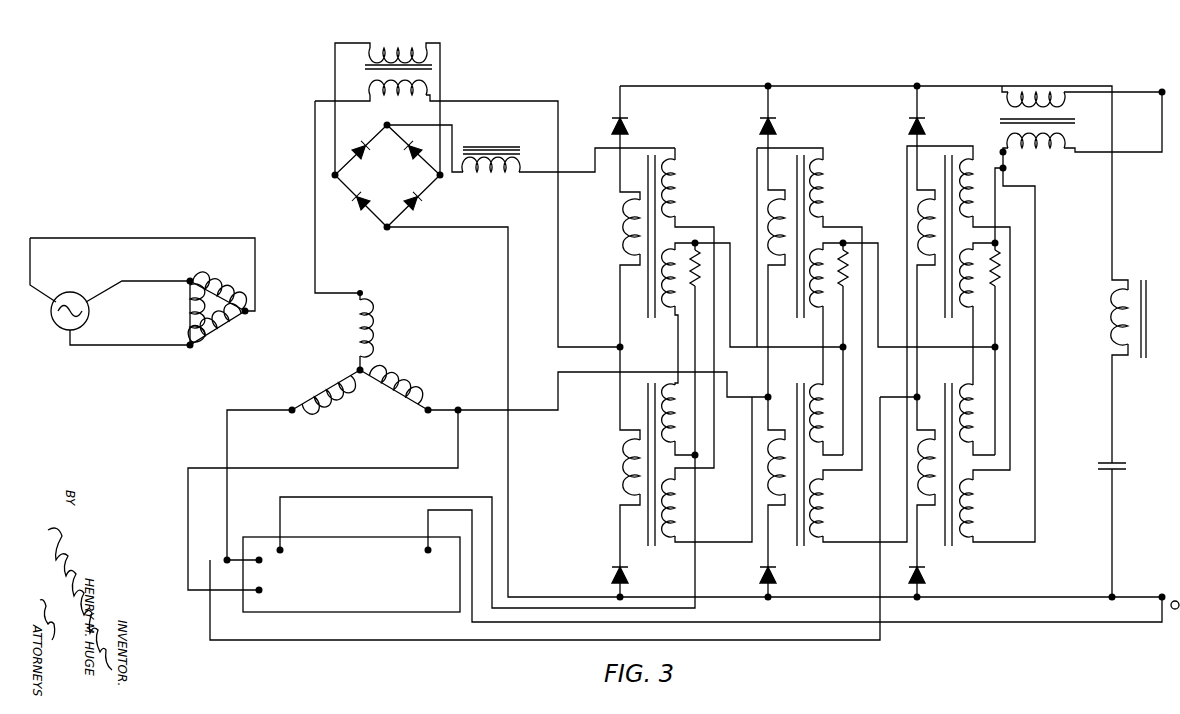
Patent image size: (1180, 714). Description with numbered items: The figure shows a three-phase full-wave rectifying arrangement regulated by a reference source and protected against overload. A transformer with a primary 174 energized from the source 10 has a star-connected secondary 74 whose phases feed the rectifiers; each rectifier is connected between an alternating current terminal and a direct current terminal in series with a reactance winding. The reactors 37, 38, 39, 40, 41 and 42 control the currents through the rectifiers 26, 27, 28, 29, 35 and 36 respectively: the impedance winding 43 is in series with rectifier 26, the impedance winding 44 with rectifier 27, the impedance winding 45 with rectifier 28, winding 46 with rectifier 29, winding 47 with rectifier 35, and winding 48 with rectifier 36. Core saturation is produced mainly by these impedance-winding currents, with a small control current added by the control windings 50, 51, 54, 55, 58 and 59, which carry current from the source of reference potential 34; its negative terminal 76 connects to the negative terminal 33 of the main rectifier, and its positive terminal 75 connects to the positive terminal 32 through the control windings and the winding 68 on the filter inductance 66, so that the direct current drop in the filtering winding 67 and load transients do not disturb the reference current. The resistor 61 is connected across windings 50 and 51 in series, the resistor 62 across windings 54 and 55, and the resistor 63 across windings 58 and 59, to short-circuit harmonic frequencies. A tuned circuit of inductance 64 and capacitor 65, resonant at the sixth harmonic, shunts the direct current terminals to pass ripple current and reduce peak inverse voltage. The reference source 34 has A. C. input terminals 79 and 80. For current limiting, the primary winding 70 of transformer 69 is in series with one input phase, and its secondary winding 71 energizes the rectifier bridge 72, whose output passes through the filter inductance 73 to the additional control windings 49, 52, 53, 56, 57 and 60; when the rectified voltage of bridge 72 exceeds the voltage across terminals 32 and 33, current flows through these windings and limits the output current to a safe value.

The source 10 is at (68, 298).
The primary 174 is at (224, 343).
The star-connected secondary 74 is at (338, 372).
The secondary winding 71 is at (392, 45).
The transformer 69 is at (368, 71).
The primary winding 70 is at (405, 100).
The rectifier bridge 72 is at (358, 208).
The filter inductance 73 is at (504, 179).
The rectifier 26 is at (616, 124).
The rectifier 27 is at (630, 577).
The rectifier 28 is at (778, 122).
The rectifier 29 is at (778, 573).
The rectifier 35 is at (926, 124).
The rectifier 36 is at (926, 573).
The reactor 37 is at (646, 178).
The reactor 38 is at (648, 382).
The reactor 39 is at (795, 322).
The reactor 40 is at (797, 548).
The reactor 41 is at (943, 321).
The reactor 42 is at (945, 548).
The impedance winding 43 is at (622, 243).
The impedance winding 44 is at (607, 490).
The impedance winding 45 is at (768, 240).
The winding 46 is at (765, 466).
The winding 47 is at (912, 223).
The winding 48 is at (915, 492).
The control winding 49 is at (686, 204).
The control winding 50 is at (675, 306).
The control winding 51 is at (684, 422).
The control winding 52 is at (684, 528).
The control winding 53 is at (827, 188).
The control winding 54 is at (826, 300).
The control winding 55 is at (827, 385).
The control winding 56 is at (826, 522).
The control winding 57 is at (975, 176).
The control winding 58 is at (976, 303).
The control winding 59 is at (975, 400).
The control winding 60 is at (984, 523).
The resistor 61 is at (698, 283).
The resistor 62 is at (846, 283).
The resistor 63 is at (998, 280).
The inductance 64 is at (1106, 324).
The capacitor 65 is at (1098, 470).
The filter inductance 66 is at (997, 122).
The filtering winding 67 is at (1050, 79).
The winding 68 is at (1042, 158).
The positive terminal 32 is at (1162, 94).
The negative terminal 33 is at (1160, 593).
The source of reference potential 34 is at (388, 616).
The positive terminal 75 is at (282, 546).
The negative terminal 76 is at (429, 544).
The A. C. input terminal 79 is at (252, 562).
The A. C. input terminal 80 is at (250, 592).